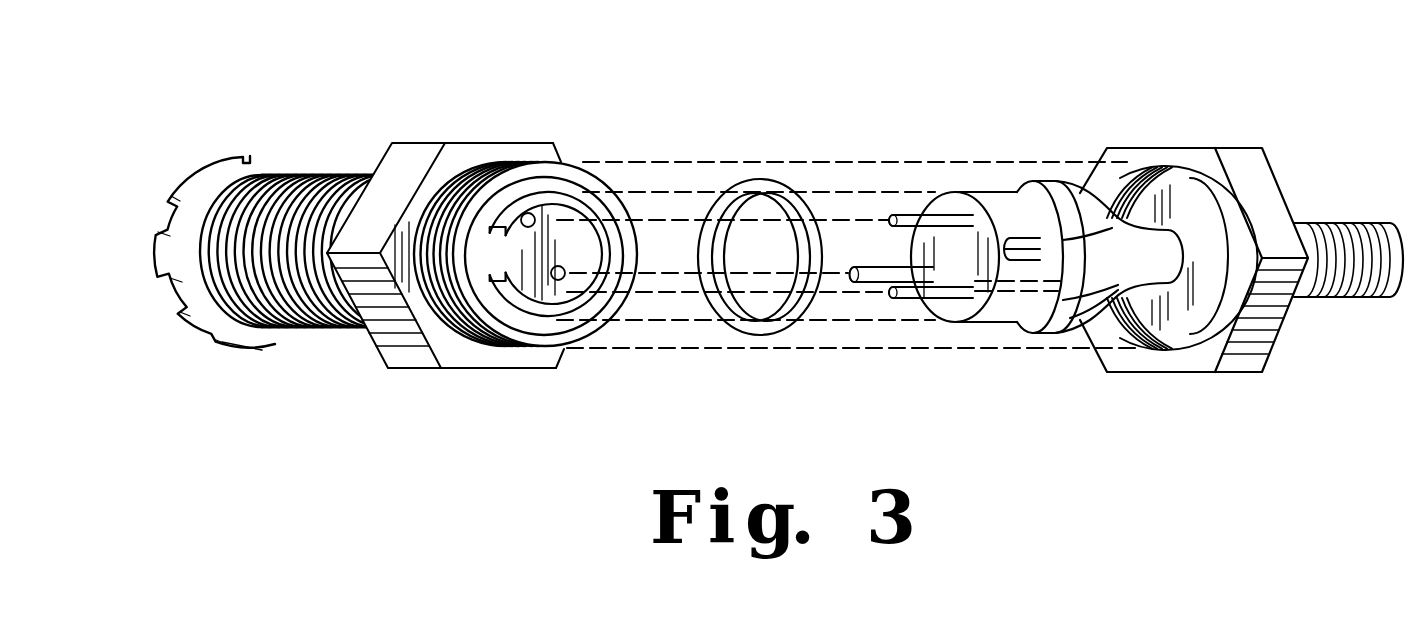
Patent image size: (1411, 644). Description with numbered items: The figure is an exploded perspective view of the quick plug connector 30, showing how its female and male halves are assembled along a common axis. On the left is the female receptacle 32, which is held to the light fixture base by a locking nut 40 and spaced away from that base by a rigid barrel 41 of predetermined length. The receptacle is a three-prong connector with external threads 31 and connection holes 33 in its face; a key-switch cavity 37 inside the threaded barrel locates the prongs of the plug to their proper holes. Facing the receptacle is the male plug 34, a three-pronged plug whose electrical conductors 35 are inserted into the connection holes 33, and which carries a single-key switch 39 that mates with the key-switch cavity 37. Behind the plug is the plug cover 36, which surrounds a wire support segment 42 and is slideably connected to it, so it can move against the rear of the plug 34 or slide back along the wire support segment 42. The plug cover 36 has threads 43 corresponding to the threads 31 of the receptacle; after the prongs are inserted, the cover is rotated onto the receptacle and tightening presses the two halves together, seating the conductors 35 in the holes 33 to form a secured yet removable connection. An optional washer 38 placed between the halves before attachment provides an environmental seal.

The quick plug connector 30 is at (910, 114).
The threads 31 is at (440, 215).
The female receptacle 32 is at (514, 348).
The connection holes 33 is at (565, 271).
The male plug 34 is at (957, 325).
The electrical conductors 35 is at (912, 216).
The plug cover 36 is at (1150, 372).
The key-switch cavity 37 is at (507, 162).
The washer 38 is at (758, 337).
The single-key switch 39 is at (1014, 246).
The locking nut 40 is at (258, 163).
The rigid barrel 41 is at (280, 332).
The wire support segment 42 is at (1328, 223).
The threads 43 is at (1160, 166).